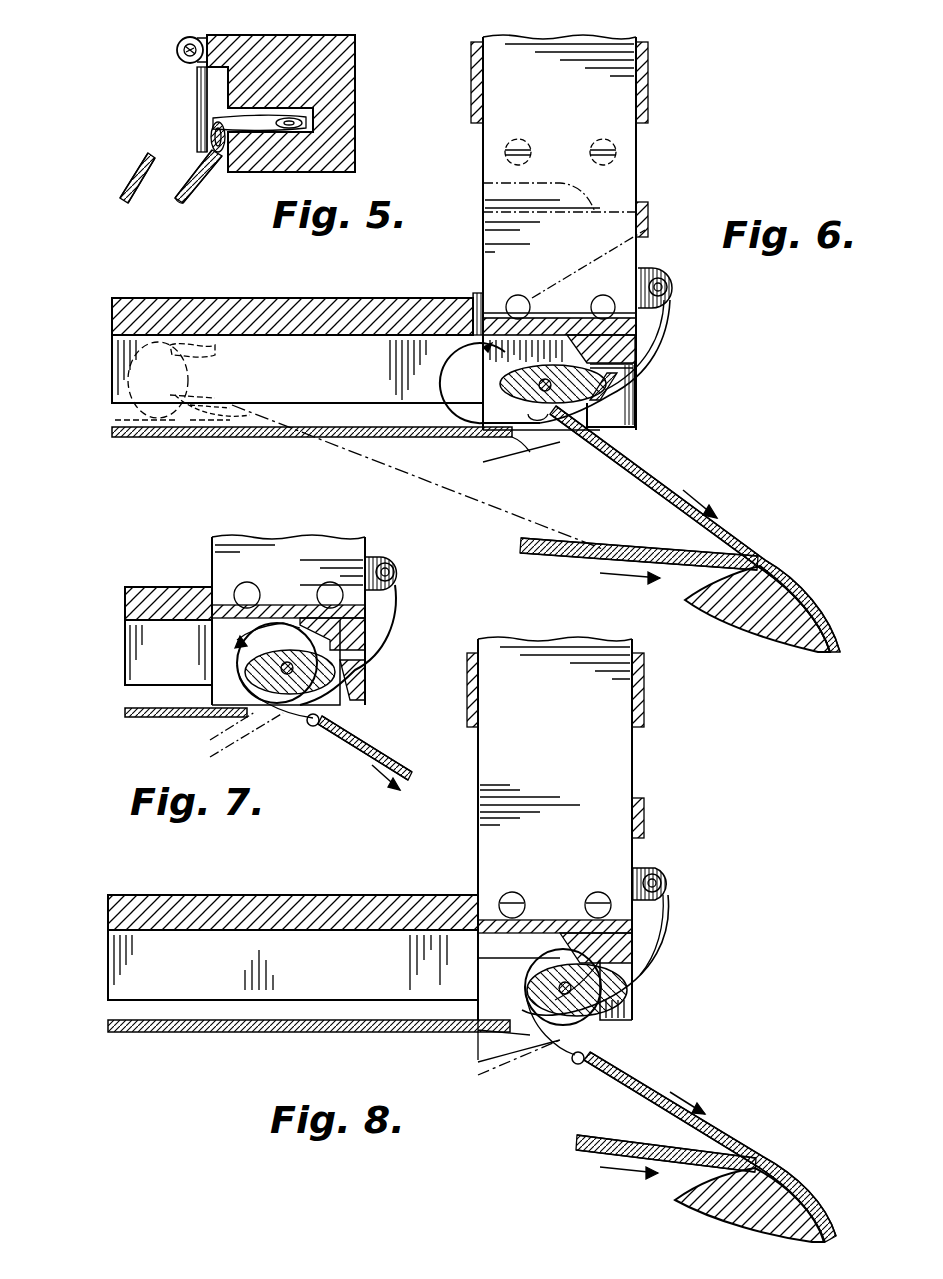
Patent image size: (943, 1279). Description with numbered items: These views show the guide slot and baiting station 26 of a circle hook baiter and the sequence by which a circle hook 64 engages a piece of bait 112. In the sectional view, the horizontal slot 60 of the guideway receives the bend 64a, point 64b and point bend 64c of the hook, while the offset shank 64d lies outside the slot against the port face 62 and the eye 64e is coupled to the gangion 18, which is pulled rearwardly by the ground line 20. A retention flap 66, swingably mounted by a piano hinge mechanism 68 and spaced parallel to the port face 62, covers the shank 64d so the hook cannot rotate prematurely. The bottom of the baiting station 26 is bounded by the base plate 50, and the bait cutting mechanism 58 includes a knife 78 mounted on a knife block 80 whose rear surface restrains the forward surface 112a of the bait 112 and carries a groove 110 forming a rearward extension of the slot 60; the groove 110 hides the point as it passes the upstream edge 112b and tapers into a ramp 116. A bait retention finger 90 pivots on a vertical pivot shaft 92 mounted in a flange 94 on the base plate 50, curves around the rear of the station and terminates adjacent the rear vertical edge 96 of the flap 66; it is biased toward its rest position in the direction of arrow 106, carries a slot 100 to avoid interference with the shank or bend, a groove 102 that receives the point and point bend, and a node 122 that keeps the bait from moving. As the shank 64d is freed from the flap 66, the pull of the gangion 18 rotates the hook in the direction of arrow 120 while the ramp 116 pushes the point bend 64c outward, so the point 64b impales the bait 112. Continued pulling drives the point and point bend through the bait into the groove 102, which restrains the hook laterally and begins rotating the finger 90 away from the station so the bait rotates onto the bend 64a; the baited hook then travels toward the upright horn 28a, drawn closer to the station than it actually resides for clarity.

In FIG. 5, the gangion 18 is at (189, 195).
In FIG. 6, the gangion 18 is at (391, 485).
In FIG. 8, the gangion 18 is at (708, 1131).
In FIG. 5, the ground line 20 is at (170, 47).
In FIG. 6, the ground line 20 is at (684, 554).
In FIG. 8, the ground line 20 is at (580, 1150).
In FIG. 6, the baiting station 26 is at (648, 418).
In FIG. 7, the baiting station 26 is at (375, 696).
In FIG. 6, the upright horn 28a is at (786, 632).
In FIG. 8, the upright horn 28a is at (690, 1205).
In FIG. 6, the base plate 50 is at (616, 428).
In FIG. 8, the base plate 50 is at (618, 1025).
In FIG. 6, the bait cutting mechanism 58 is at (646, 148).
In FIG. 5, the horizontal slot 60 is at (232, 116).
In FIG. 6, the horizontal slot 60 is at (297, 350).
In FIG. 7, the horizontal slot 60 is at (168, 636).
In FIG. 8, the horizontal slot 60 is at (293, 947).
In FIG. 5, the port face 62 is at (207, 90).
In FIG. 5, the circle hook 64 is at (298, 121).
In FIG. 6, the circle hook 64 is at (205, 440).
In FIG. 7, the circle hook 64 is at (306, 730).
In FIG. 8, the circle hook 64 is at (556, 1050).
In FIG. 6, the bend 64a is at (128, 378).
In FIG. 6, the point 64b is at (210, 362).
In FIG. 7, the point 64b is at (355, 690).
In FIG. 8, the point 64b is at (640, 1000).
In FIG. 6, the point bend 64c is at (204, 391).
In FIG. 7, the point bend 64c is at (300, 636).
In FIG. 6, the shank 64d is at (145, 447).
In FIG. 6, the eye 64e is at (258, 396).
In FIG. 5, the retention flap 66 is at (212, 130).
In FIG. 6, the retention flap 66 is at (272, 440).
In FIG. 7, the retention flap 66 is at (142, 722).
In FIG. 8, the retention flap 66 is at (342, 1036).
In FIG. 5, the piano hinge mechanism 68 is at (191, 38).
In FIG. 6, the knife 78 is at (633, 268).
In FIG. 7, the knife 78 is at (288, 555).
In FIG. 8, the knife 78 is at (618, 745).
In FIG. 6, the knife block 80 is at (640, 338).
In FIG. 7, the knife block 80 is at (360, 618).
In FIG. 8, the knife block 80 is at (620, 946).
In FIG. 6, the bait retention finger 90 is at (660, 358).
In FIG. 7, the bait retention finger 90 is at (348, 645).
In FIG. 8, the bait retention finger 90 is at (662, 923).
In FIG. 6, the pivot shaft 92 is at (666, 280).
In FIG. 8, the pivot shaft 92 is at (666, 884).
In FIG. 6, the flange 94 is at (672, 294).
In FIG. 7, the flange 94 is at (381, 573).
In FIG. 8, the flange 94 is at (662, 868).
In FIG. 6, the rear vertical edge 96 is at (546, 394).
In FIG. 7, the slot 100 is at (293, 706).
In FIG. 6, the groove 102 is at (638, 405).
In FIG. 7, the groove 102 is at (365, 712).
In FIG. 8, the groove 102 is at (640, 980).
In FIG. 6, the arrow 106 is at (652, 370).
In FIG. 6, the groove 110 is at (537, 313).
In FIG. 7, the groove 110 is at (225, 600).
In FIG. 8, the groove 110 is at (533, 908).
In FIG. 6, the piece of bait 112 is at (560, 422).
In FIG. 8, the piece of bait 112 is at (500, 986).
In FIG. 6, the forward surface 112a is at (553, 310).
In FIG. 6, the upstream edge 112b is at (470, 388).
In FIG. 8, the upstream edge 112b is at (542, 970).
In FIG. 6, the ramp 116 is at (557, 347).
In FIG. 7, the ramp 116 is at (272, 615).
In FIG. 8, the ramp 116 is at (580, 925).
In FIG. 7, the arrow 120 is at (200, 722).
In FIG. 6, the node 122 is at (612, 386).
In FIG. 7, the node 122 is at (340, 672).
In FIG. 8, the node 122 is at (577, 990).